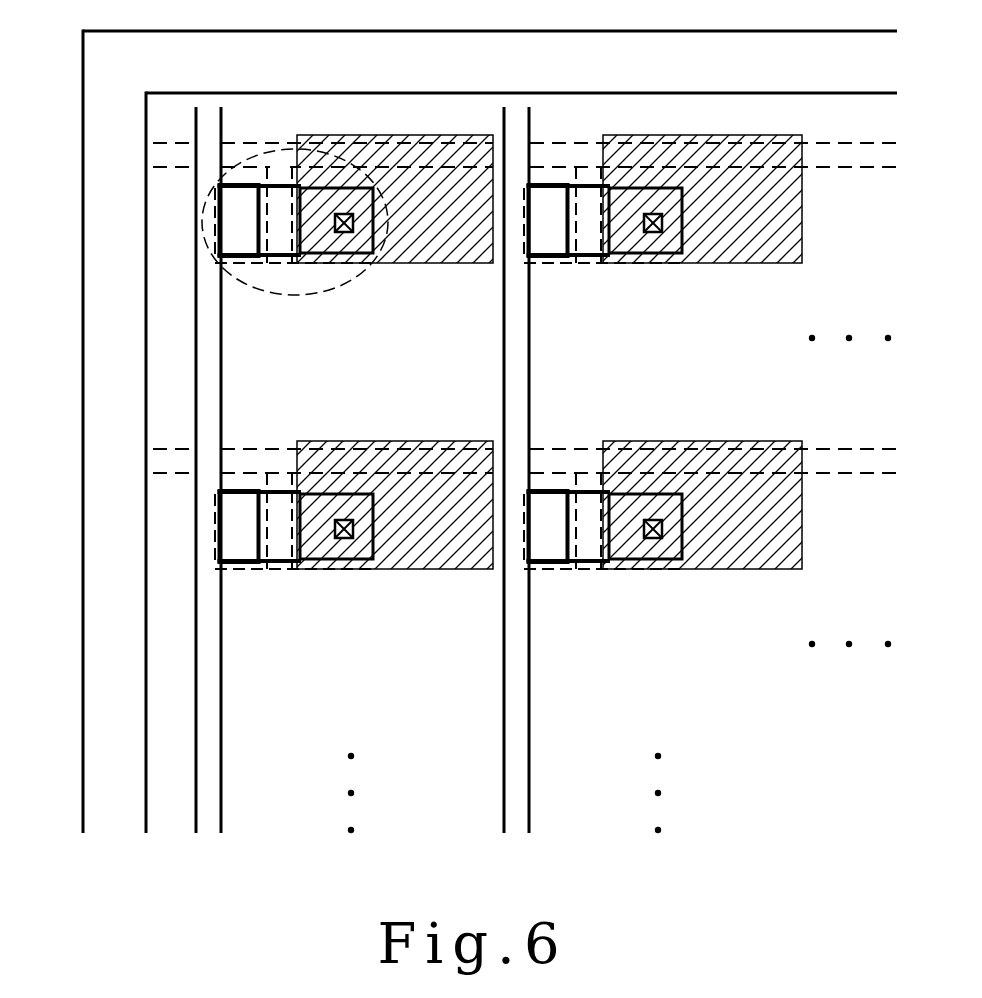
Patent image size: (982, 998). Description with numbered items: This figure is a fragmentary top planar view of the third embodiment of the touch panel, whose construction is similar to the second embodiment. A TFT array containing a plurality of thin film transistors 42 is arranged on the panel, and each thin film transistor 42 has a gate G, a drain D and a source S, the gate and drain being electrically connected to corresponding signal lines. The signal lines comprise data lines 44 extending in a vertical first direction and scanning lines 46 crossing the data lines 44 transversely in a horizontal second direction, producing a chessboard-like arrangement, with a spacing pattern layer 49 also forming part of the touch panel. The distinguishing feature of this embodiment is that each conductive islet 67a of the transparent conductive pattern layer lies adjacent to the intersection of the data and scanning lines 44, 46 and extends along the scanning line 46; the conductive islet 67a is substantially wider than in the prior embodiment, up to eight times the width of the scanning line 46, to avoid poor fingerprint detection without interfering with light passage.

The thin film transistor 42 is at (292, 295).
The data line 44 is at (212, 628).
The scanning line 46 is at (157, 155).
The spacing pattern layer 49 is at (140, 76).
The conductive islet 67a is at (787, 238).